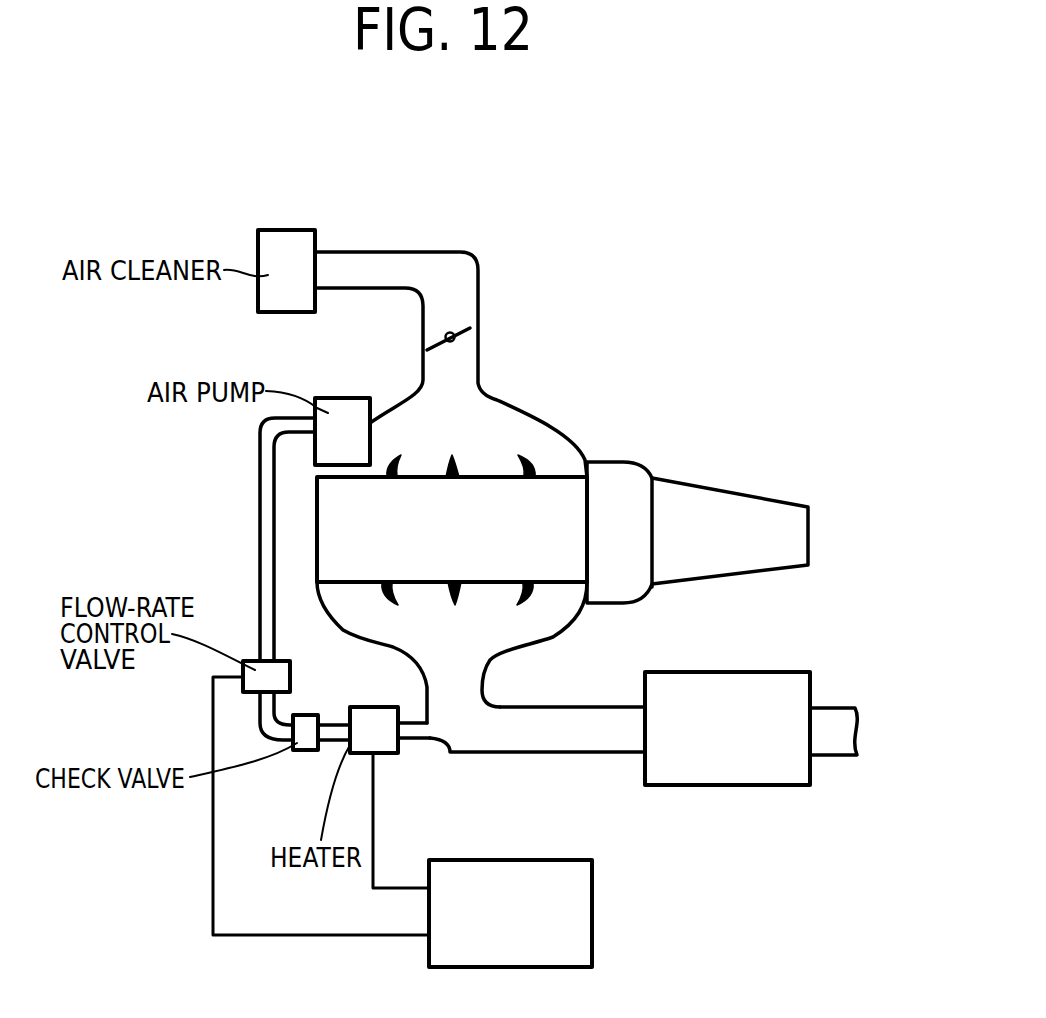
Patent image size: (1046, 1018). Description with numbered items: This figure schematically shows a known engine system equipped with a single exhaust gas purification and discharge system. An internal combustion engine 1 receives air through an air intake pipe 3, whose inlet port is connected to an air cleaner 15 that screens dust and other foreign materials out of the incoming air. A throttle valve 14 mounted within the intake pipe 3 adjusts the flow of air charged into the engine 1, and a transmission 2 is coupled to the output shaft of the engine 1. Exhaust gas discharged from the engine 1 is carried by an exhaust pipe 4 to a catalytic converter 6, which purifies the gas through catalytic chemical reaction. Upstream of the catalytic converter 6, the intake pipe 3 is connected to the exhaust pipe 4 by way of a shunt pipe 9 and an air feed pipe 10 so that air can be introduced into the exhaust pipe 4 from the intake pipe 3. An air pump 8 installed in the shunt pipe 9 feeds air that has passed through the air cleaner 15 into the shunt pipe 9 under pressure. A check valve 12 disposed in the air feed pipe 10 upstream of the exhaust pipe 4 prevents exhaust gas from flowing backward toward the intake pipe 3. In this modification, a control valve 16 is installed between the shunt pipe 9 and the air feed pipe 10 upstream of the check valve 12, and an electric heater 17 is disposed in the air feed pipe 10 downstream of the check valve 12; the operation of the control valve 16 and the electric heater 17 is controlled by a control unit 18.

The internal combustion engine 1 is at (538, 495).
The transmission 2 is at (727, 500).
The air intake pipe 3 is at (457, 410).
The exhaust pipe 4 is at (540, 740).
The catalytic converter 6 is at (725, 773).
The air pump 8 is at (343, 410).
The shunt pipe 9 is at (260, 528).
The air feed pipe 10 is at (415, 733).
The check valve 12 is at (302, 751).
The throttle valve 14 is at (451, 332).
The air cleaner 15 is at (285, 234).
The control valve 16 is at (250, 693).
The electric heater 17 is at (358, 754).
The control unit 18 is at (583, 932).